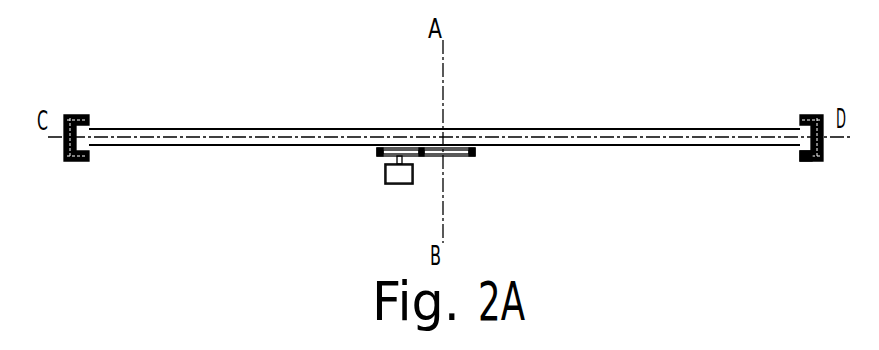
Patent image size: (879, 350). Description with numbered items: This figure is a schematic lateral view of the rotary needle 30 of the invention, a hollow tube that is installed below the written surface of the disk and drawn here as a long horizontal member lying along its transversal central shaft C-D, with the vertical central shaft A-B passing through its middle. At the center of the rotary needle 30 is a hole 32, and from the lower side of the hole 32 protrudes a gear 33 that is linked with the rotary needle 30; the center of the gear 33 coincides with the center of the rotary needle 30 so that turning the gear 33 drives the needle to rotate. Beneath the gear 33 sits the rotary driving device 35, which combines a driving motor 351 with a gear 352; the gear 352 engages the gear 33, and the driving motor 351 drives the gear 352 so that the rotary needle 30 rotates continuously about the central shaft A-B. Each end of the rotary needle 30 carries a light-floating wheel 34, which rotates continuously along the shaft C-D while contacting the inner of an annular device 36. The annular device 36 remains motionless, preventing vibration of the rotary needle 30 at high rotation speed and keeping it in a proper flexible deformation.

The rotary needle 30 is at (543, 133).
The hole 32 is at (460, 157).
The gear 33 is at (472, 152).
The light-floating wheel 34 is at (798, 150).
The rotary driving device 35 is at (380, 170).
The driving motor 351 is at (408, 184).
The gear 352 is at (377, 153).
The annular device 36 is at (817, 115).